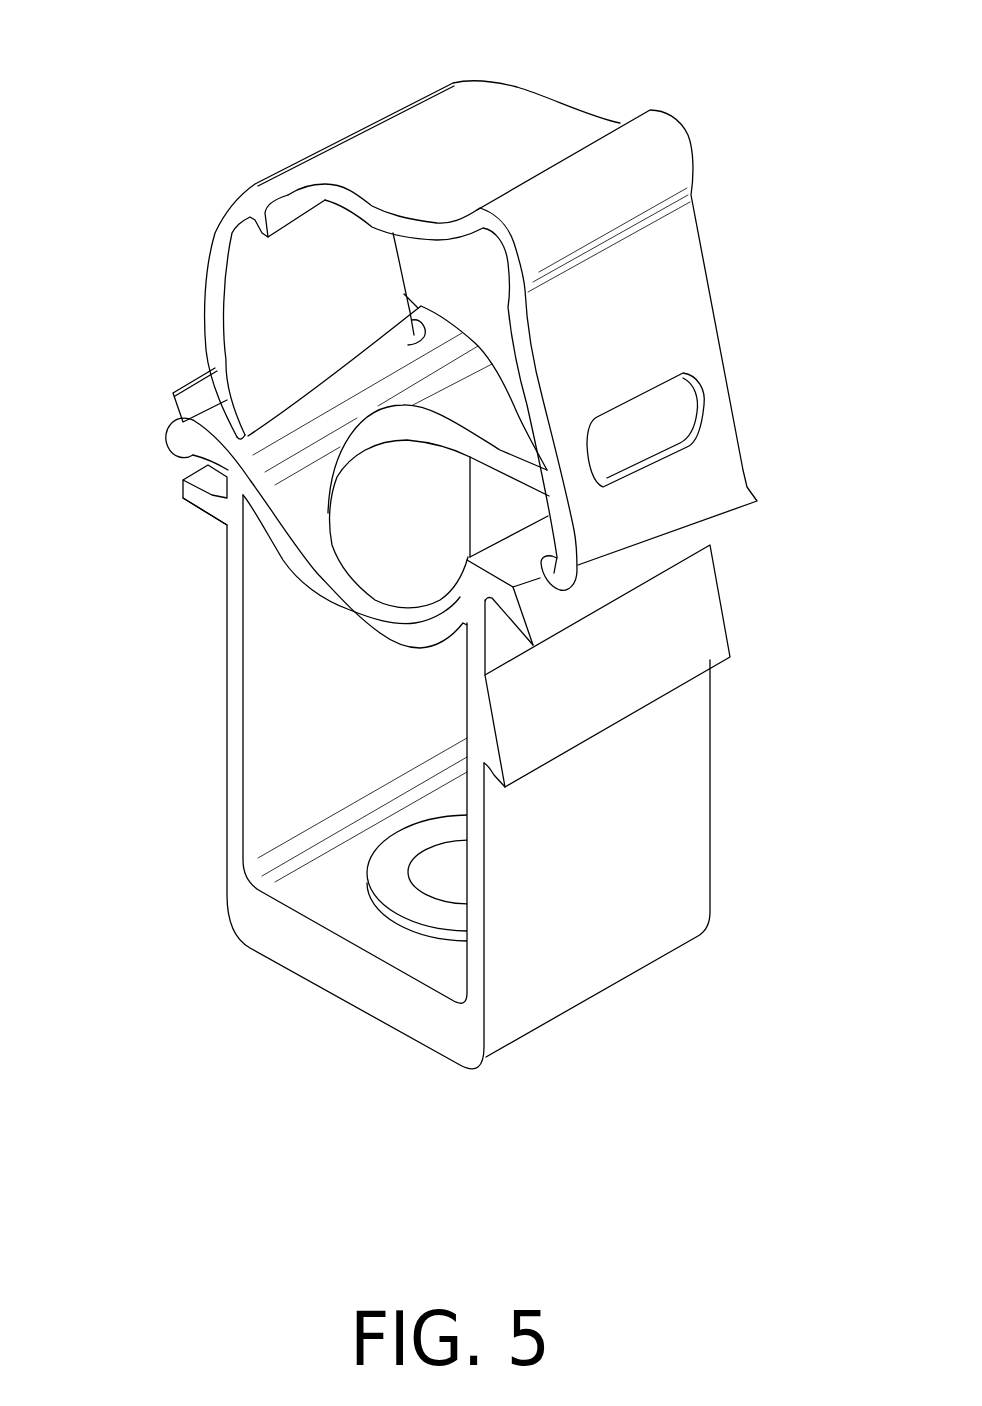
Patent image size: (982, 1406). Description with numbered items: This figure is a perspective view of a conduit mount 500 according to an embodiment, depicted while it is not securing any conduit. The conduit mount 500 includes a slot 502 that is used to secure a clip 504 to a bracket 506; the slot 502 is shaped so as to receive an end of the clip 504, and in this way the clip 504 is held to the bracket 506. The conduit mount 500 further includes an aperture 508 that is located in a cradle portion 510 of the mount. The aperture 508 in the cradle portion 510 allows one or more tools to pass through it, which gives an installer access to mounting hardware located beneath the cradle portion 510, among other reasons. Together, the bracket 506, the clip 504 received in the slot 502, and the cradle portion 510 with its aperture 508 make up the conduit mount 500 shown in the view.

The conduit mount 500 is at (699, 37).
The slot 502 is at (199, 428).
The clip 504 is at (457, 83).
The bracket 506 is at (700, 797).
The aperture 508 is at (357, 590).
The cradle portion 510 is at (300, 563).